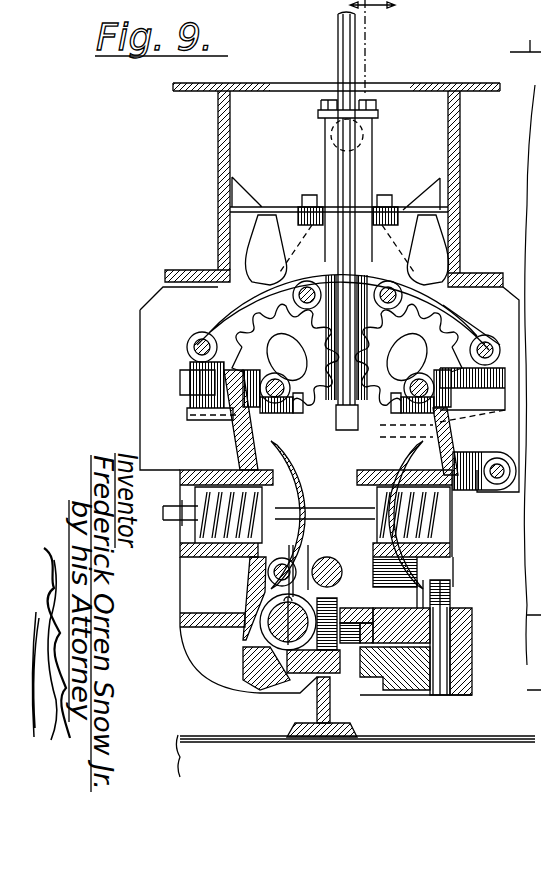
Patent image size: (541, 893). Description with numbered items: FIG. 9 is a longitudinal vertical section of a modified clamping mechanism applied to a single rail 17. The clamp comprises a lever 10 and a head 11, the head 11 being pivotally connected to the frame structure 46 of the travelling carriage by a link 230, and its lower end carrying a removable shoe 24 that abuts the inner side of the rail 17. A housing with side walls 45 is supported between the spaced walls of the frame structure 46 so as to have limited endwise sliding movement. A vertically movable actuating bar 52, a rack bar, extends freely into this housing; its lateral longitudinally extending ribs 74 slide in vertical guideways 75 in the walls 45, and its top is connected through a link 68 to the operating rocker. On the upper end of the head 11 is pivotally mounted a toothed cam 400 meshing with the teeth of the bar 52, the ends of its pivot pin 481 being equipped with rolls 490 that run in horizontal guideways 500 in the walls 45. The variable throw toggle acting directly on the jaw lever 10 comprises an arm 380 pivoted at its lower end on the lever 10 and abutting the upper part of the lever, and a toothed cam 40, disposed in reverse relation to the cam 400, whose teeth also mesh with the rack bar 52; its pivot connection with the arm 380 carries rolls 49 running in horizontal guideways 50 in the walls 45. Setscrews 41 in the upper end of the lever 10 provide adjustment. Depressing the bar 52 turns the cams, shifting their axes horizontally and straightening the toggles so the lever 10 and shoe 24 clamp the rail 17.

The link 68 is at (337, 45).
The actuating bar 52 is at (376, 147).
The vertical guideways 75 is at (330, 195).
The ribs 74 is at (277, 258).
The side walls 45 is at (216, 268).
The frame structure 46 is at (140, 310).
The toothed cam 40 is at (254, 333).
The rolls 49 is at (195, 336).
The horizontal guideways 50 is at (190, 368).
The setscrews 41 is at (180, 380).
The arm 380 is at (232, 440).
The toothed cam 400 is at (432, 327).
The pivot pin 481 is at (473, 345).
The horizontal guideways 500 is at (472, 389).
The rolls 490 is at (330, 440).
The head 11 is at (450, 440).
The link 230 is at (480, 490).
The jaw lever 10 is at (370, 772).
The removable shoe 24 is at (357, 678).
The rail 17 is at (307, 736).